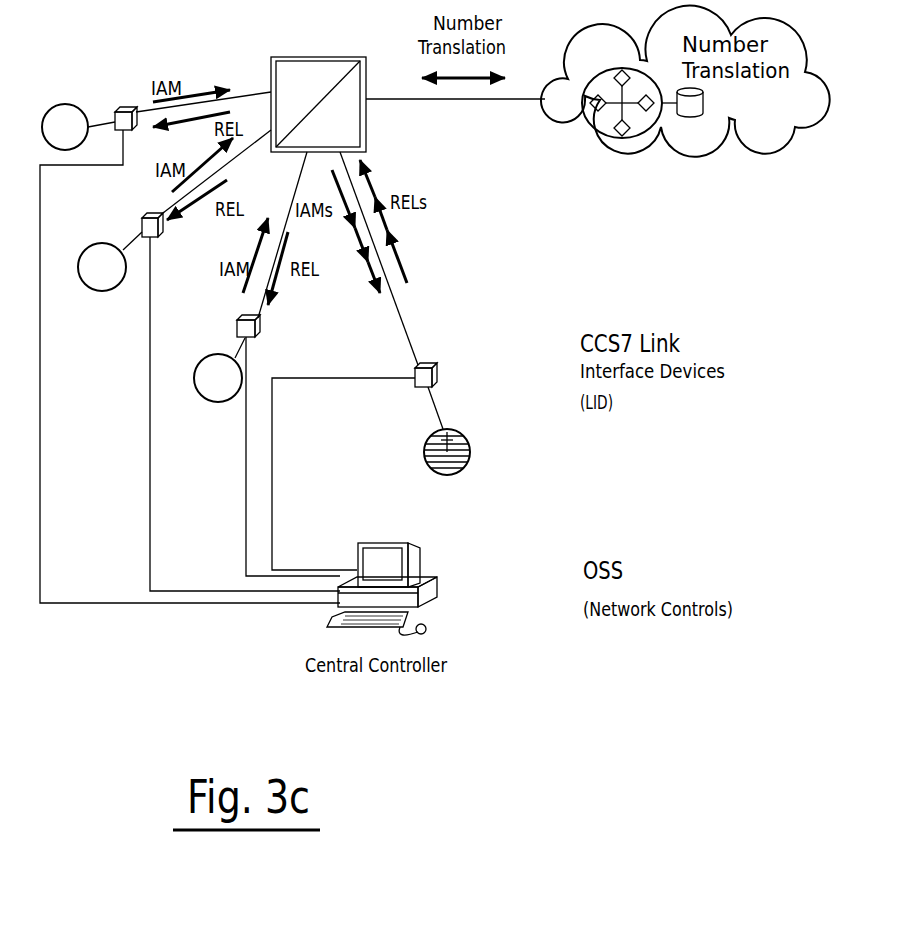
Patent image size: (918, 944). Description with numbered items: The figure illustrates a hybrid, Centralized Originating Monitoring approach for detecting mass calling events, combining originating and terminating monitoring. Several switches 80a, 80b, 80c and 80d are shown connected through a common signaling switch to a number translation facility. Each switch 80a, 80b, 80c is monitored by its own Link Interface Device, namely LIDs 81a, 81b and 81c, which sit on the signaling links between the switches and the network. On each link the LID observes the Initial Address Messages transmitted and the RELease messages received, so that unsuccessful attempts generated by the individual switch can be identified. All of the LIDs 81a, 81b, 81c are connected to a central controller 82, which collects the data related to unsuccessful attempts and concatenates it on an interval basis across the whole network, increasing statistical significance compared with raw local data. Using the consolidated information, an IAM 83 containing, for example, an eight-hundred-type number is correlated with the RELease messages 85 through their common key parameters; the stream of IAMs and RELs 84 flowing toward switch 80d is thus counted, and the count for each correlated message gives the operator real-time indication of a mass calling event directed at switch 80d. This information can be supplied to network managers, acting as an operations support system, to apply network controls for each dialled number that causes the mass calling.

The switch 80a is at (56, 104).
The switch 80b is at (85, 290).
The switch 80c is at (225, 403).
The switch 80d is at (470, 445).
The Link Interface Device 81a is at (126, 109).
The Link Interface Device 81b is at (143, 222).
The Link Interface Device 81c is at (237, 334).
The central controller 82 is at (375, 542).
The IAM 83 is at (193, 92).
The IAM/REL messages 84 is at (362, 273).
The RELease messages 85 is at (247, 100).